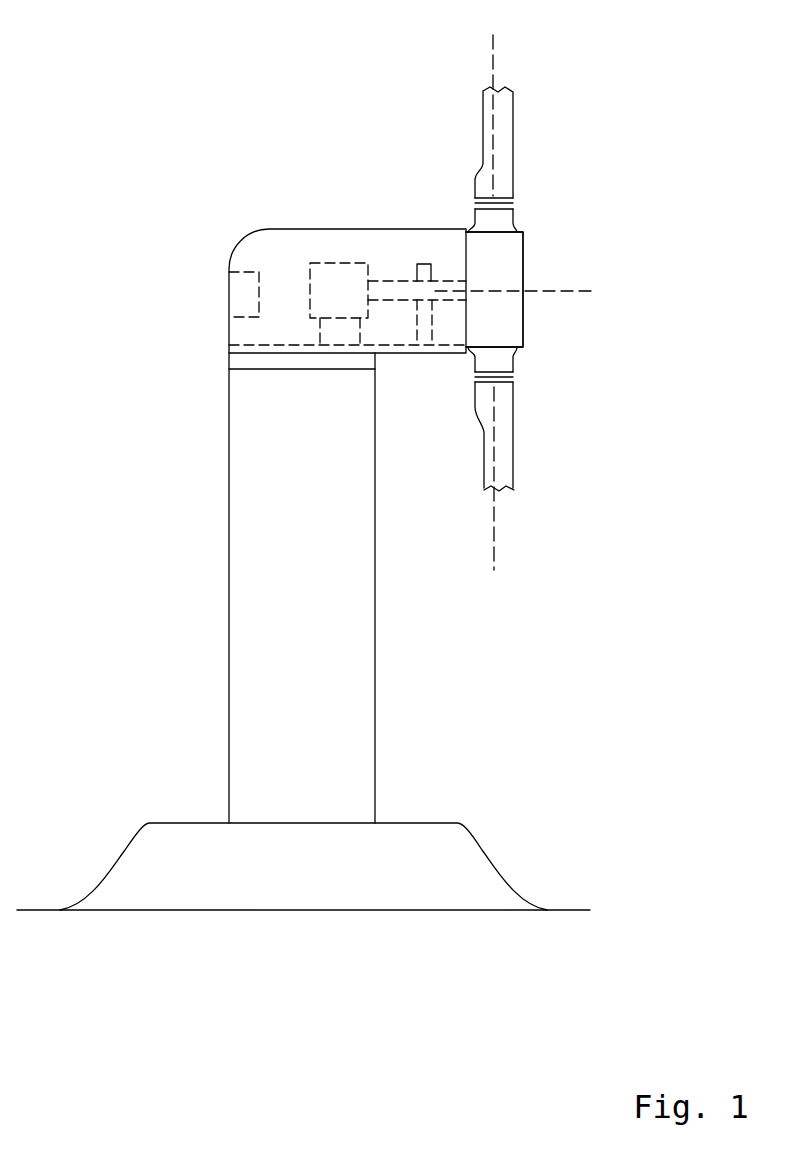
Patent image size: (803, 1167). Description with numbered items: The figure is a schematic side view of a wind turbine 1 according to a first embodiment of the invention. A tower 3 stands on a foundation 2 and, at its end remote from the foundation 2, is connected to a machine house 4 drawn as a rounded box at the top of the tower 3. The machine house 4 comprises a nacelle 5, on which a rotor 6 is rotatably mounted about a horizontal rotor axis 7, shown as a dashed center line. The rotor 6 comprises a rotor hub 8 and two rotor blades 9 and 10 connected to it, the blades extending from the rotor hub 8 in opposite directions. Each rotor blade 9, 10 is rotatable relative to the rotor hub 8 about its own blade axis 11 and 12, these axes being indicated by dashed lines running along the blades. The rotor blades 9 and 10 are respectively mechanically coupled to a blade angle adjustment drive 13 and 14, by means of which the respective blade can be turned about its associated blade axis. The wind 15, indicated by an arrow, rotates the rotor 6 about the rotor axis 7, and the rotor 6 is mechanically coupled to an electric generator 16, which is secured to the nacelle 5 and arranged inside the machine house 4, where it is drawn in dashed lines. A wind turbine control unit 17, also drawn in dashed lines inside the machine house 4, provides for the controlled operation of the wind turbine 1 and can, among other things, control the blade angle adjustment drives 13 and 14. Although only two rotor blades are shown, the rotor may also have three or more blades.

The wind turbine 1 is at (82, 89).
The foundation 2 is at (115, 860).
The tower 3 is at (236, 625).
The machine house 4 is at (286, 229).
The nacelle 5 is at (239, 345).
The rotor 6 is at (540, 240).
The rotor axis 7 is at (593, 291).
The rotor hub 8 is at (523, 330).
The rotor blade 9 is at (514, 447).
The rotor blade 10 is at (483, 120).
The blade axis 11 is at (495, 537).
The blade axis 12 is at (493, 45).
The blade angle adjustment drive 13 is at (506, 379).
The blade angle adjustment drive 14 is at (475, 202).
The wind 15 is at (675, 148).
The electric generator 16 is at (323, 263).
The wind turbine control unit 17 is at (240, 272).